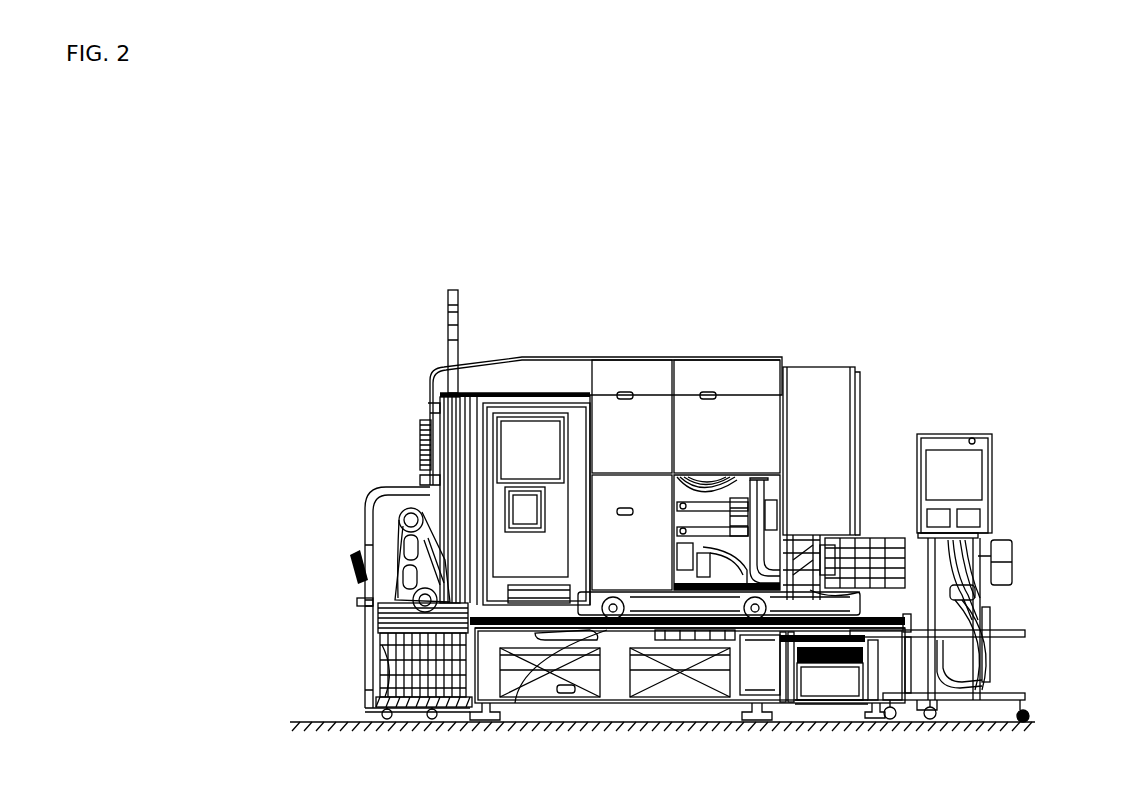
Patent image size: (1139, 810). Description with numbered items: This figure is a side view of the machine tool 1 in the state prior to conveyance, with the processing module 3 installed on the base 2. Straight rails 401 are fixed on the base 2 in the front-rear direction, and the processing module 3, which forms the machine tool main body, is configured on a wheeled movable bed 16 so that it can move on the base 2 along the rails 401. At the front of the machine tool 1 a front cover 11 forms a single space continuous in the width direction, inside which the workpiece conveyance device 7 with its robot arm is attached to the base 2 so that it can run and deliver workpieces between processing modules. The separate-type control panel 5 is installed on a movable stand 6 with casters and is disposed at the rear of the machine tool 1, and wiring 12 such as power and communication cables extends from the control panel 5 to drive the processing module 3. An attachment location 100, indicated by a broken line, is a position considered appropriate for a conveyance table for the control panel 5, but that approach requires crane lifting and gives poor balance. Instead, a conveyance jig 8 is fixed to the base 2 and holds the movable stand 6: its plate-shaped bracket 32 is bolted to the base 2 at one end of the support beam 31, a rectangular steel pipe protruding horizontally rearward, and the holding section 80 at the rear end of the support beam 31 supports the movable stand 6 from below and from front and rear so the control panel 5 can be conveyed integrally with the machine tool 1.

The machine tool 1 is at (556, 348).
The base 2 is at (515, 702).
The processing module 3 is at (648, 384).
The control panel 5 is at (978, 480).
The movable stand 6 is at (985, 592).
The workpiece conveyance device 7 is at (408, 515).
The conveyance jig 8 is at (990, 650).
The front cover 11 is at (360, 601).
The wiring 12 is at (985, 680).
The movable bed 16 is at (606, 640).
The support beam 31 is at (838, 666).
The bracket 32 is at (748, 705).
The holding section 80 is at (968, 700).
The attachment location 100 is at (672, 705).
The rails 401 is at (897, 614).